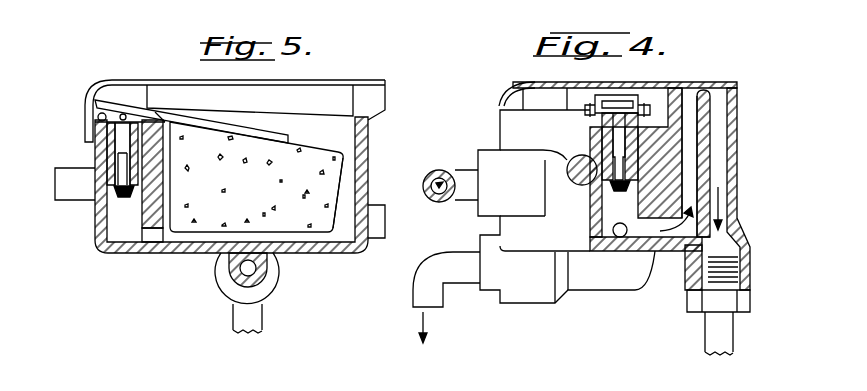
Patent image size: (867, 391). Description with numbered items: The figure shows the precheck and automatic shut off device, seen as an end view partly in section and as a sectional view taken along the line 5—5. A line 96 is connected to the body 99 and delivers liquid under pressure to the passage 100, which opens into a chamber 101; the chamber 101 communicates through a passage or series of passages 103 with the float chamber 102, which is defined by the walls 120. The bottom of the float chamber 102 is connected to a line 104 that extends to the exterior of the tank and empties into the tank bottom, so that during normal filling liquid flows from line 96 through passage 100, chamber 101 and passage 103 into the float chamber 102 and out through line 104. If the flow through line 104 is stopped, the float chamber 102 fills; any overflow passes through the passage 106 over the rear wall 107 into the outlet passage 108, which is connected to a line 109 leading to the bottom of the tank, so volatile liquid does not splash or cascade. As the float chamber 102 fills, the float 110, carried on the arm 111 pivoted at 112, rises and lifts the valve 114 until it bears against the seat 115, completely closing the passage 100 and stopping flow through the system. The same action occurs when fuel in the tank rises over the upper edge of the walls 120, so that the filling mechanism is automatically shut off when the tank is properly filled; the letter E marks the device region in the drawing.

In FIG. 4, the section line 5— 5 is at (620, 90).
In FIG. 5, the line 96 is at (62, 177).
In FIG. 4, the line 96 is at (458, 176).
In FIG. 4, the body 99 is at (505, 132).
In FIG. 4, the passage 100 is at (597, 160).
In FIG. 5, the chamber 101 is at (123, 235).
In FIG. 4, the chamber 101 is at (600, 218).
In FIG. 5, the float chamber 102 is at (347, 177).
In FIG. 5, the passage 103 is at (157, 240).
In FIG. 4, the passage 103 is at (621, 238).
In FIG. 5, the line 104 is at (243, 270).
In FIG. 4, the line 104 is at (428, 297).
In FIG. 4, the passage 106 is at (688, 100).
In FIG. 4, the rear wall 107 is at (700, 135).
In FIG. 4, the outlet passage 108 is at (720, 193).
In FIG. 4, the line 109 is at (718, 335).
In FIG. 5, the float 110 is at (256, 212).
In FIG. 5, the arm 111 is at (170, 117).
In FIG. 4, the arm 111 is at (640, 102).
In FIG. 5, the pivot 112 is at (103, 112).
In FIG. 4, the pivot 112 is at (588, 110).
In FIG. 5, the valve 114 is at (112, 203).
In FIG. 4, the valve 114 is at (606, 200).
In FIG. 5, the seat 115 is at (117, 190).
In FIG. 4, the seat 115 is at (597, 183).
In FIG. 5, the walls 120 is at (368, 119).
In FIG. 5, the reservoir E is at (310, 250).
In FIG. 4, the reservoir E is at (540, 250).